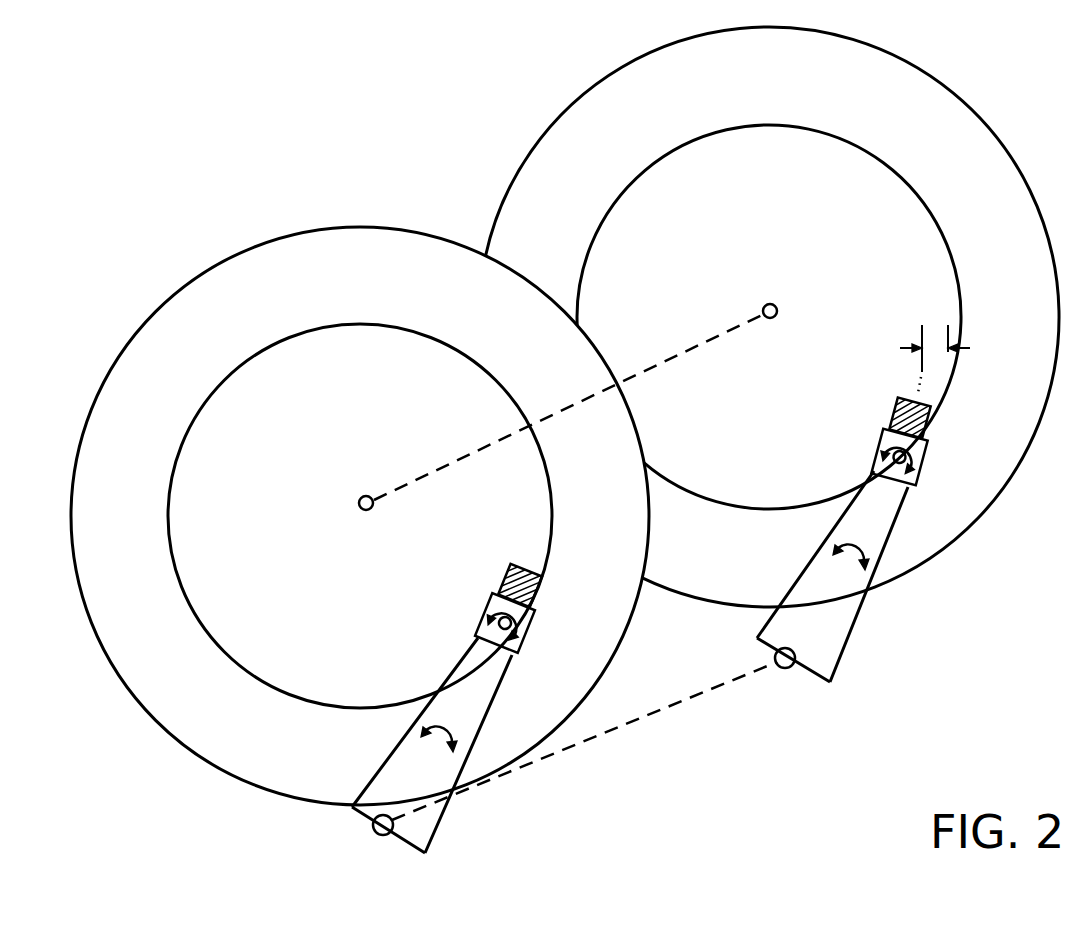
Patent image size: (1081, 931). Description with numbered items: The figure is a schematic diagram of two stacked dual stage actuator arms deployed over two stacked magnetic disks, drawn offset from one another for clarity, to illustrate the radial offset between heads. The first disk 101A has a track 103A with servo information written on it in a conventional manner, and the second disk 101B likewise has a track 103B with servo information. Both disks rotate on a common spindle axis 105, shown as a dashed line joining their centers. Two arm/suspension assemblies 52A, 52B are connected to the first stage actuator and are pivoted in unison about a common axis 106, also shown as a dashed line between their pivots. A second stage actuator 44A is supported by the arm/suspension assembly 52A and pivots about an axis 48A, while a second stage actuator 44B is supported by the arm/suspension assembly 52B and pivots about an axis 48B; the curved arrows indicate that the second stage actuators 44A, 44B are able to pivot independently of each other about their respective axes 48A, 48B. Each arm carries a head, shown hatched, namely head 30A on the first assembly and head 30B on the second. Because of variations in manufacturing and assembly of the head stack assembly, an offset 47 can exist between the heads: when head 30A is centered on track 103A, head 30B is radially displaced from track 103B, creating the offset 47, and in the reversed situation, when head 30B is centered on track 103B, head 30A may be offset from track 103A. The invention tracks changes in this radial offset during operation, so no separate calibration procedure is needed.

The first disk 101A is at (201, 263).
The track 103A is at (313, 330).
The second disk 101B is at (615, 72).
The track 103B is at (733, 126).
The common spindle axis 105 is at (706, 343).
The common axis 106 is at (634, 724).
The head 30A is at (507, 586).
The axis 48A is at (486, 633).
The second stage actuator 44A is at (535, 634).
The arm/suspension assembly 52A is at (494, 686).
The head 30B is at (884, 420).
The axis 48B is at (880, 472).
The second stage actuator 44B is at (918, 466).
The arm/suspension assembly 52B is at (901, 519).
The offset 47 is at (920, 359).